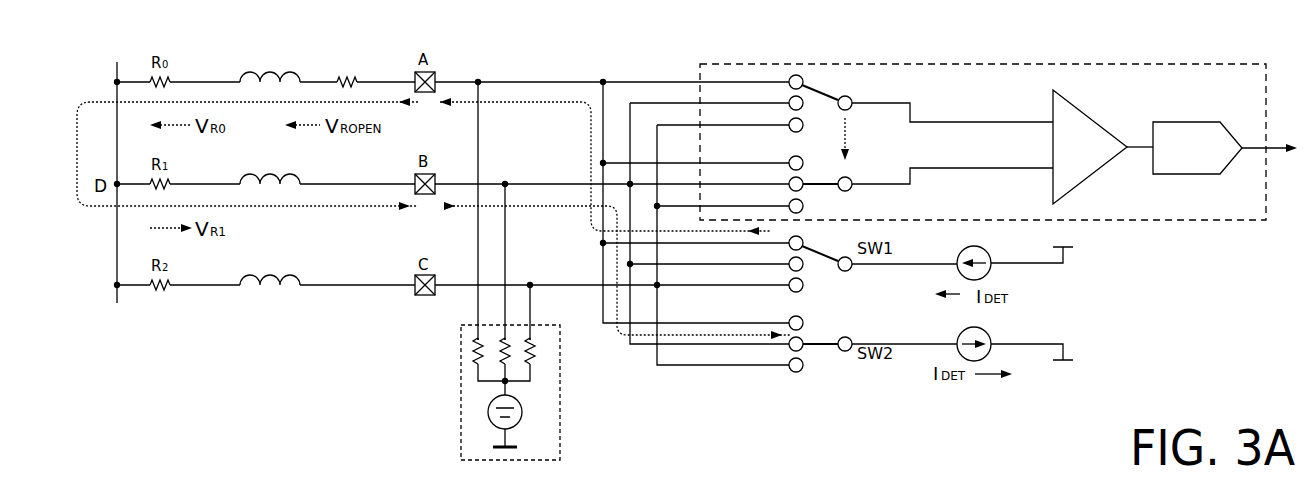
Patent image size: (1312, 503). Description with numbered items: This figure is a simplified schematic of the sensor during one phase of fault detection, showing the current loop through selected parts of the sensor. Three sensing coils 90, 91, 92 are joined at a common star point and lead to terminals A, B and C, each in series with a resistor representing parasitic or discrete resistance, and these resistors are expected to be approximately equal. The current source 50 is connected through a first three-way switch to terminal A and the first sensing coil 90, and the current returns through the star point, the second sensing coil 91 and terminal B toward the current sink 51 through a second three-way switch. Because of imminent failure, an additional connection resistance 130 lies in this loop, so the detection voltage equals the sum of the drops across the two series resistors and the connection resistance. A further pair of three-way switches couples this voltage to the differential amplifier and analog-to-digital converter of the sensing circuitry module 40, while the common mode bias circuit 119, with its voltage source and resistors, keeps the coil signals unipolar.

The first sensing coil 90 is at (257, 71).
The second sensing coil 91 is at (257, 173).
The third sensing coil 92 is at (257, 274).
The connection resistance 130 is at (345, 70).
The sensing circuitry module 40 is at (1207, 64).
The current source 50 is at (990, 271).
The current sink 51 is at (986, 333).
The common mode bias circuit 119 is at (461, 426).